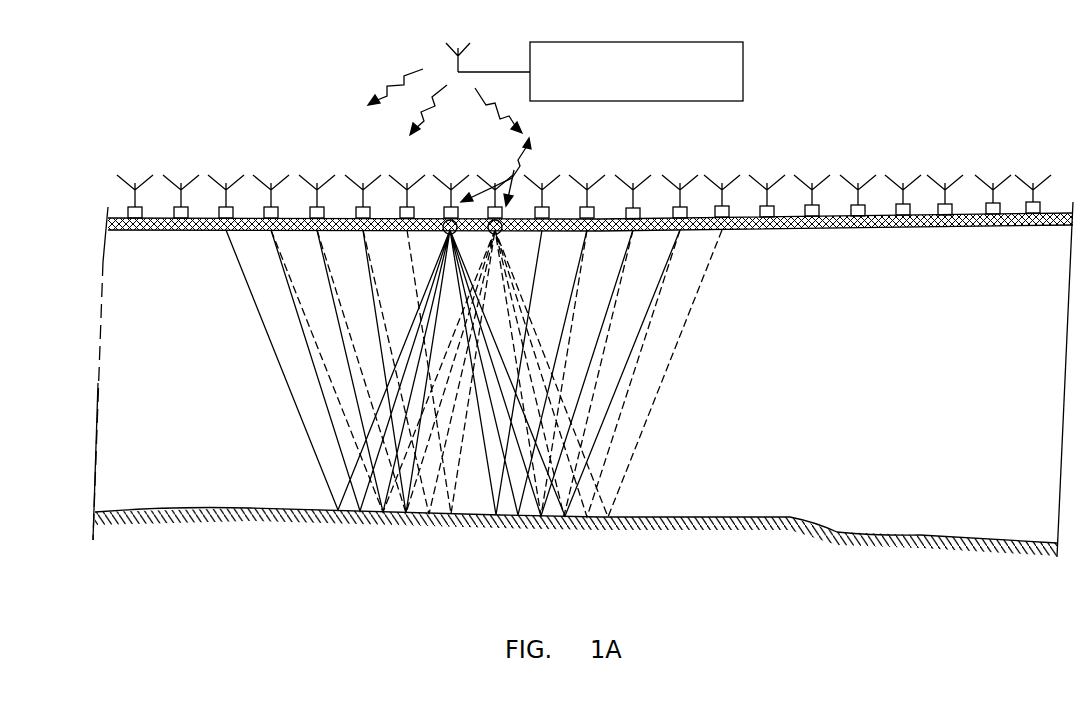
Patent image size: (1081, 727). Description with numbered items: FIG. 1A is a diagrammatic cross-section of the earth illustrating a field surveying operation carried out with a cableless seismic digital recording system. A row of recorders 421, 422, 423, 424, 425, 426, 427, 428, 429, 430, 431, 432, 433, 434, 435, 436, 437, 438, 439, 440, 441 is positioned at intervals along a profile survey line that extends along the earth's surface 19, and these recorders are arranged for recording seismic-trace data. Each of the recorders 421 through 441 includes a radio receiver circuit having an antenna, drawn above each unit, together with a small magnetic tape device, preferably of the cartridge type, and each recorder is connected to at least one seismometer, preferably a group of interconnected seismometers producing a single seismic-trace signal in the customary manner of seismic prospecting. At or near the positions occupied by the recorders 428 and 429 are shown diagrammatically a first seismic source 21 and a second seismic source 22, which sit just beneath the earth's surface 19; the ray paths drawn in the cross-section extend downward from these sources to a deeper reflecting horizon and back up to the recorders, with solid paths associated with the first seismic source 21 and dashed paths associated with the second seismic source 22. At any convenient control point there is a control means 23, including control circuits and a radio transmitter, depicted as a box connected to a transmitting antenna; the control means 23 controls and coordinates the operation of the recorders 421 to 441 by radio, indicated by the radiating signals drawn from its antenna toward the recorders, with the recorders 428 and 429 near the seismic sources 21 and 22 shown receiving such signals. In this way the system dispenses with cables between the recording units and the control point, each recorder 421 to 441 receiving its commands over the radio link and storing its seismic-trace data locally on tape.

The earth's surface 19 is at (752, 232).
The first seismic source 21 is at (447, 233).
The second seismic source 22 is at (504, 231).
The control means 23 is at (743, 72).
The recorder 421 is at (135, 183).
The recorder 422 is at (181, 183).
The recorder 423 is at (226, 183).
The recorder 424 is at (271, 183).
The recorder 425 is at (317, 183).
The recorder 426 is at (363, 183).
The recorder 427 is at (407, 183).
The recorder 428 is at (451, 183).
The recorder 429 is at (495, 183).
The recorder 430 is at (542, 183).
The recorder 431 is at (587, 183).
The recorder 432 is at (633, 183).
The recorder 433 is at (680, 183).
The recorder 434 is at (722, 182).
The recorder 435 is at (767, 182).
The recorder 436 is at (812, 182).
The recorder 437 is at (858, 182).
The recorder 438 is at (903, 181).
The recorder 439 is at (945, 181).
The recorder 440 is at (993, 181).
The recorder 441 is at (1033, 180).